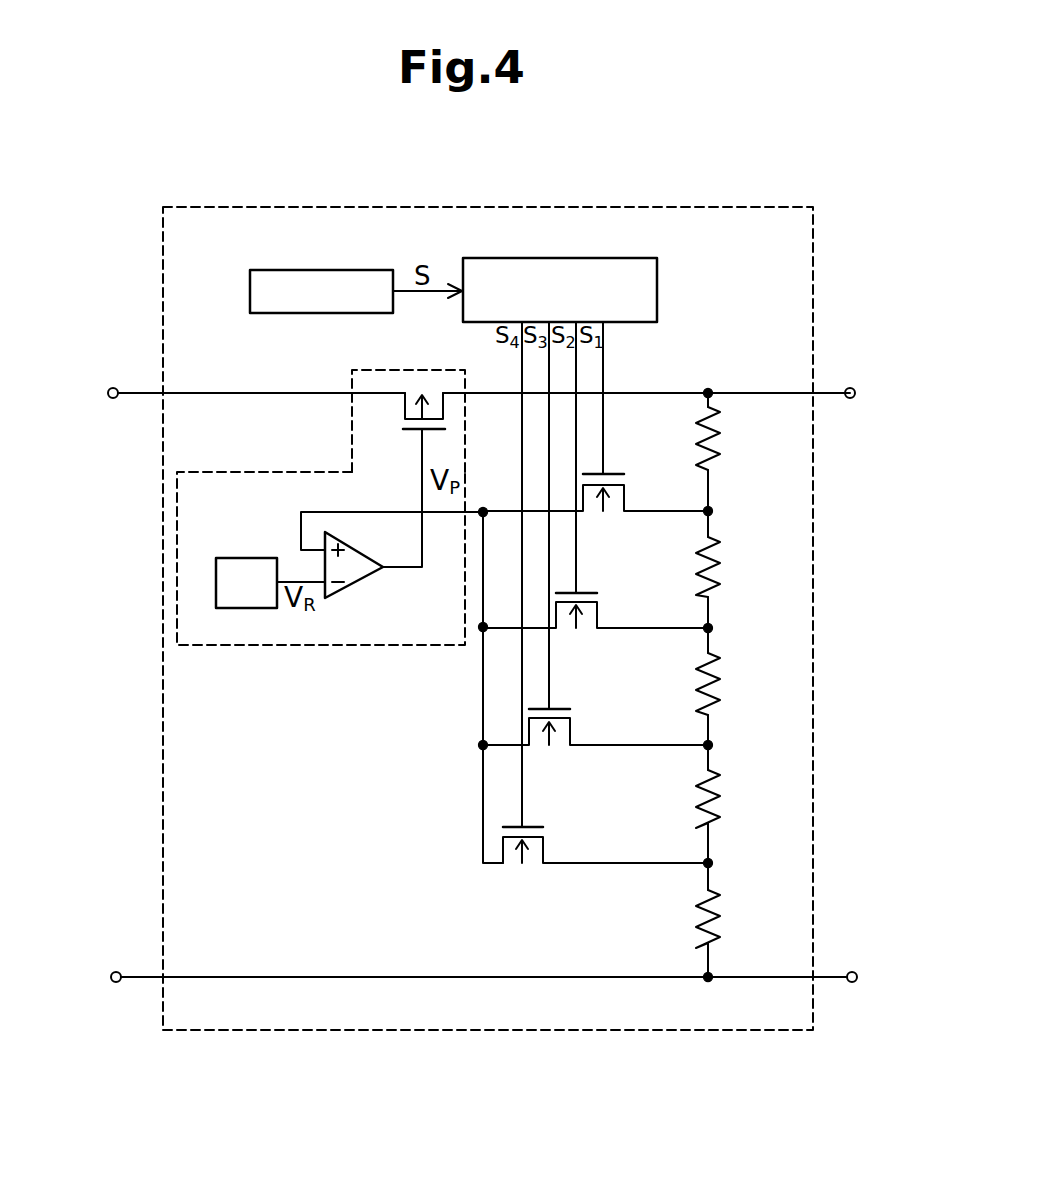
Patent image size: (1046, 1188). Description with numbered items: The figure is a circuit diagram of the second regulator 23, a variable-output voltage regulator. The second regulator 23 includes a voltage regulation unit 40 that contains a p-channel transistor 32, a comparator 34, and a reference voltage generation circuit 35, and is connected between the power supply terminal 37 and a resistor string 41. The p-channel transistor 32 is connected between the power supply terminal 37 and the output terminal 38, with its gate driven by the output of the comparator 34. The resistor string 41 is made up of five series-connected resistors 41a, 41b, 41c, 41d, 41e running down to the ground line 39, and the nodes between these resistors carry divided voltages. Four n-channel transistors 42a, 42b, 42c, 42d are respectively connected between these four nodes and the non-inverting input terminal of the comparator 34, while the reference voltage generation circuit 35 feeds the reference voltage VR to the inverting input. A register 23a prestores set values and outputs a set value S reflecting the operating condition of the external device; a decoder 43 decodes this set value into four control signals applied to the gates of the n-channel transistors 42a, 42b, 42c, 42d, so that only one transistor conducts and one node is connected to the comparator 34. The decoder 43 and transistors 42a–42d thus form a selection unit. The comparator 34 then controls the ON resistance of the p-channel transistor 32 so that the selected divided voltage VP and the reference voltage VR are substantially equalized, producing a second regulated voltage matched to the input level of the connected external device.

The second regulator 23 is at (692, 207).
The register 23a is at (360, 270).
The decoder 43 is at (595, 258).
The power supply terminal 37 is at (113, 387).
The output terminal 38 is at (850, 387).
The ground line 39 is at (247, 979).
The p-channel transistor 32 is at (386, 426).
The voltage regulation unit 40 is at (290, 647).
The comparator 34 is at (362, 549).
The reference voltage generation circuit 35 is at (242, 556).
The resistor string 41 is at (718, 687).
The resistor 41a is at (696, 445).
The resistor 41b is at (696, 583).
The resistor 41c is at (696, 683).
The resistor 41d is at (696, 800).
The resistor 41e is at (674, 919).
The n-channel transistor 42a is at (606, 517).
The n-channel transistor 42b is at (580, 634).
The n-channel transistor 42c is at (553, 751).
The n-channel transistor 42d is at (526, 869).